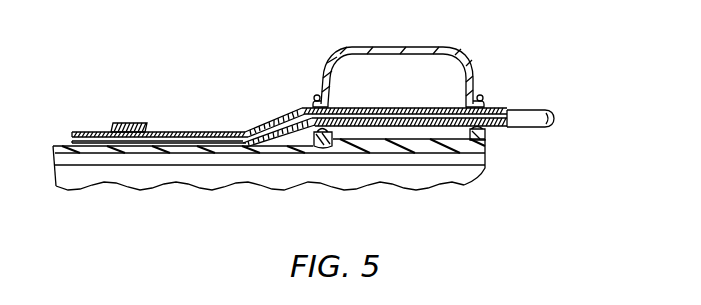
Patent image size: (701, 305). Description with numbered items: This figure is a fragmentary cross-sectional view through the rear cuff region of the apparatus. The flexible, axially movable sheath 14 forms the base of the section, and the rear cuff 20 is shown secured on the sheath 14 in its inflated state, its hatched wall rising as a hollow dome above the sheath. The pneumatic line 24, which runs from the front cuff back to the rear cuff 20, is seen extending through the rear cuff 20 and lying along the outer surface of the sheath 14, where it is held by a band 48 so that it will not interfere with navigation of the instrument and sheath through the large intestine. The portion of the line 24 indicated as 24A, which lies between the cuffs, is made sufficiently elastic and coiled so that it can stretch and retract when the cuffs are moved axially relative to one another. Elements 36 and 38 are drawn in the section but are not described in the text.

The sheath 14 is at (485, 160).
The rear cuff 20 is at (413, 47).
The line 24 is at (207, 108).
The portion of the line 24A is at (536, 110).
The contact plate 36 is at (491, 110).
The bent portion 38 is at (298, 111).
The bands 48 is at (125, 123).